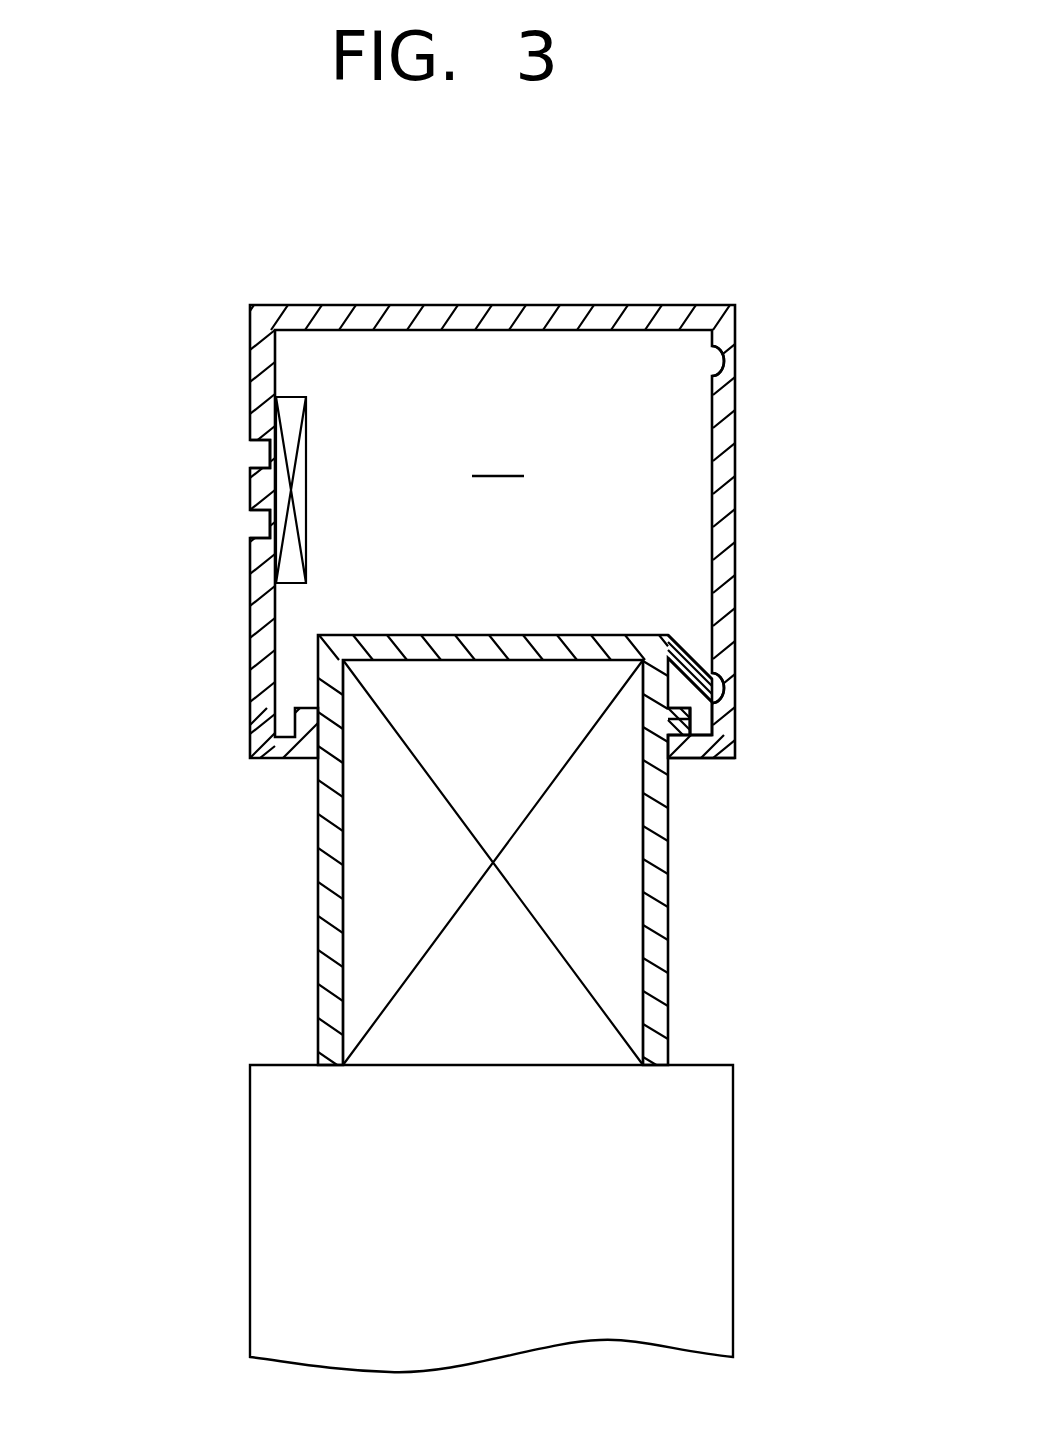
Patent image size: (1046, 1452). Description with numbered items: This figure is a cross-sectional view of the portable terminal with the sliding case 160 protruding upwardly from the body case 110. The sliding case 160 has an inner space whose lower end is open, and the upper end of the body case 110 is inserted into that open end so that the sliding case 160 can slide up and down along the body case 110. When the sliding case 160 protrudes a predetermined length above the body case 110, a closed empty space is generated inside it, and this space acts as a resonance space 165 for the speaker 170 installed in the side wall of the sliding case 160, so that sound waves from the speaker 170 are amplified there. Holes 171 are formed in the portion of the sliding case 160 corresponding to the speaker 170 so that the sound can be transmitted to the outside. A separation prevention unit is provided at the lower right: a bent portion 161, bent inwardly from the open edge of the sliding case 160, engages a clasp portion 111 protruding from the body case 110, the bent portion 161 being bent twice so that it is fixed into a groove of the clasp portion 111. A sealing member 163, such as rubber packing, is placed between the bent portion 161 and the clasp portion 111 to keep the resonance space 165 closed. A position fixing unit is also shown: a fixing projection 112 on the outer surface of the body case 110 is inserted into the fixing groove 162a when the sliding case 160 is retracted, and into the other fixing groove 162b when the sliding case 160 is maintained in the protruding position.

The body case 110 is at (250, 1108).
The clasp portion 111 is at (683, 645).
The fixing projection 112 is at (707, 690).
The sliding case 160 is at (522, 305).
The bent portion 161 is at (710, 760).
The fixing groove 162a is at (719, 362).
The fixing groove 162b is at (720, 690).
The sealing member 163 is at (643, 730).
The resonance space 165 is at (500, 459).
The speaker 170 is at (313, 477).
The hole 171 is at (259, 456).